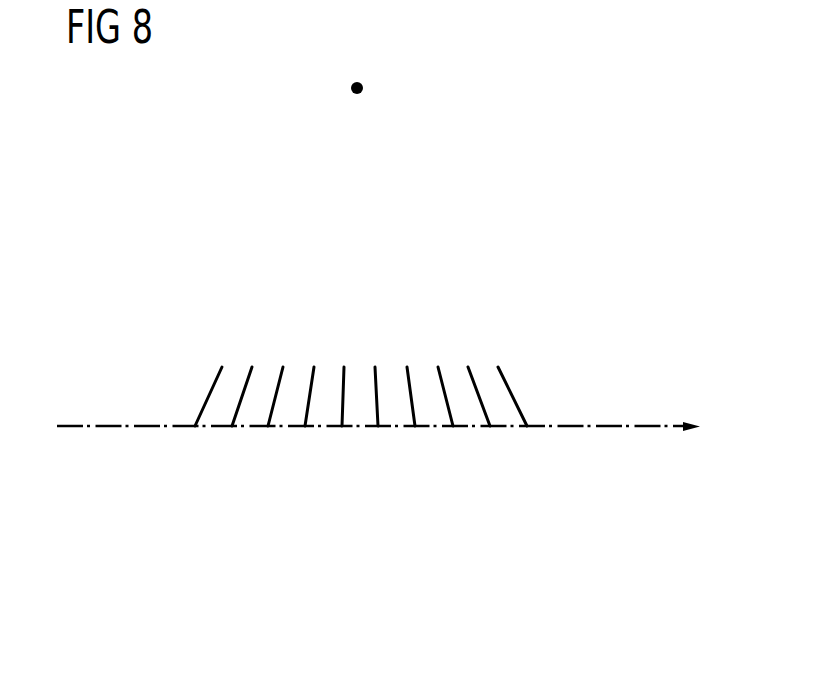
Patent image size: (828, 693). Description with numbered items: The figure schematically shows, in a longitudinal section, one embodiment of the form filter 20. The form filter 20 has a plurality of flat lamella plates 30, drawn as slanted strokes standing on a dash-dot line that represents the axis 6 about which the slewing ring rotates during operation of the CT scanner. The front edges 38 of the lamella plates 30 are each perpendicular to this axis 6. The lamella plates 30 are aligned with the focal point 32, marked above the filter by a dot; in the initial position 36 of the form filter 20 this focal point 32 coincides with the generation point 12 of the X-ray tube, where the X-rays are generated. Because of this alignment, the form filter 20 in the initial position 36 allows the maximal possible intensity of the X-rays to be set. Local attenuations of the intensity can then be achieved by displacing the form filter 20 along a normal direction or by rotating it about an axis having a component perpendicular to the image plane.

The axis 6 is at (648, 426).
The generation point 12 is at (363, 52).
The focal point 32 is at (357, 86).
The form filter 20 is at (404, 359).
The lamella plates 30 is at (499, 367).
The initial position 36 is at (111, 423).
The front edges 38 is at (252, 367).